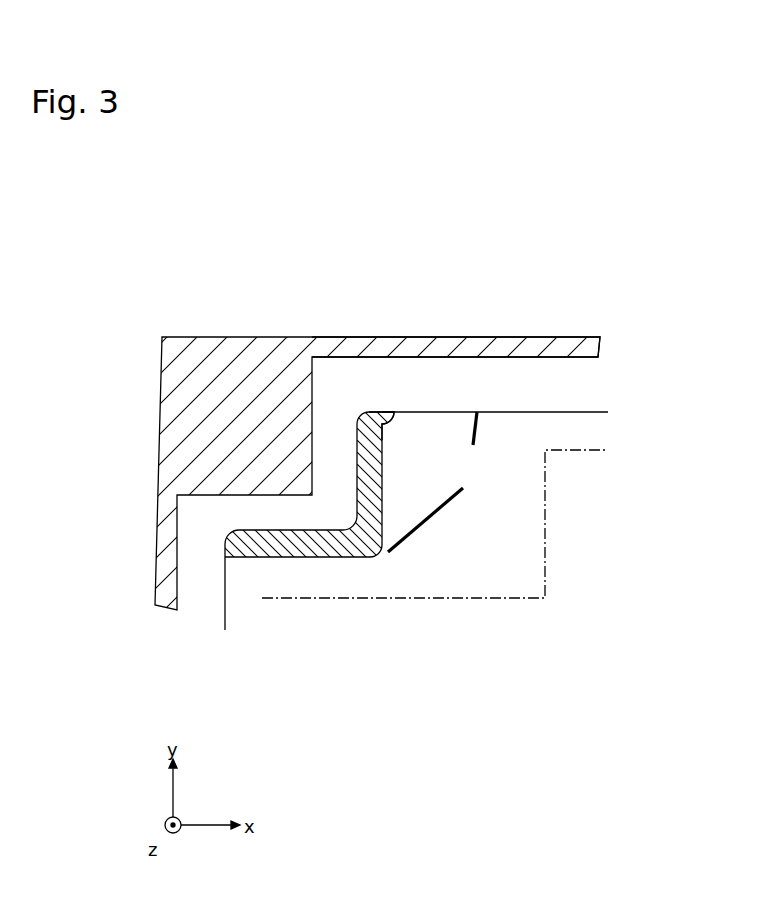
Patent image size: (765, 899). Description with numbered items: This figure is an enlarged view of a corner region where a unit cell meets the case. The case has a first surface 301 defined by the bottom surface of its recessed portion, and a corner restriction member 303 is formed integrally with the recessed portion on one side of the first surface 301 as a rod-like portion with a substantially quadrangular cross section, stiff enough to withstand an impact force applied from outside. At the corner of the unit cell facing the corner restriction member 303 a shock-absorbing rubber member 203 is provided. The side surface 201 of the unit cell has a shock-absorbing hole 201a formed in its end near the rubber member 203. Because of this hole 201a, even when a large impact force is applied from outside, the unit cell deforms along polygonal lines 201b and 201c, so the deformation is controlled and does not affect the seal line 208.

The corner restriction member 303 is at (192, 397).
The first surface 301 is at (468, 336).
The side surface 201 is at (562, 411).
The shock-absorbing hole 201a is at (422, 410).
The polygonal line 201b is at (480, 438).
The polygonal line 201c is at (428, 525).
The rubber member 203 is at (313, 557).
The seal line 208 is at (485, 598).